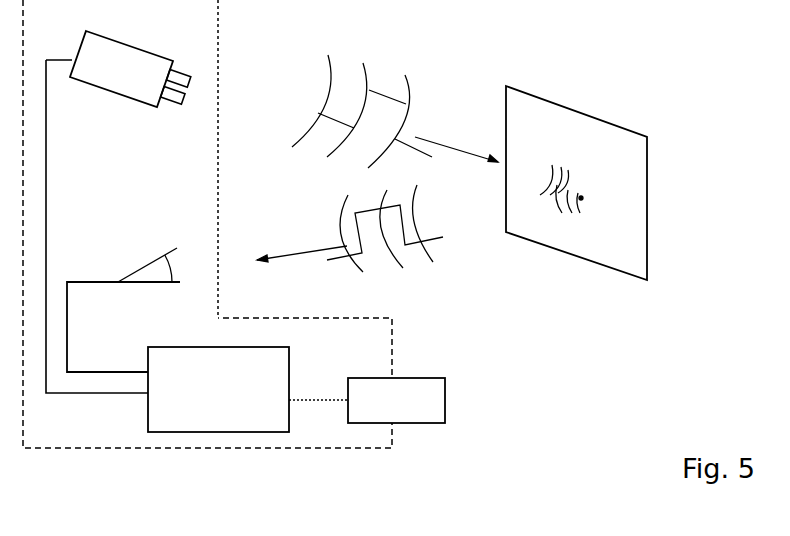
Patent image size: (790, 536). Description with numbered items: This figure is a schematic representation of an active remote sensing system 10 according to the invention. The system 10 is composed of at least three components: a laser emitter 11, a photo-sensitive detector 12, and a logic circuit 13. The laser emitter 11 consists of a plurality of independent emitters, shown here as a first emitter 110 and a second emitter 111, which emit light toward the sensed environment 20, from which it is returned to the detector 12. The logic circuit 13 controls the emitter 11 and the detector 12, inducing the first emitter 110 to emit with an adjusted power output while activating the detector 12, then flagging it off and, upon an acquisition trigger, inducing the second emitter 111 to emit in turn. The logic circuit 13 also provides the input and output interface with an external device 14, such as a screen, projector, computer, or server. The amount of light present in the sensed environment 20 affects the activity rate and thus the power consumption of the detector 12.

The active remote sensing system 10 is at (228, 28).
The laser emitter 11 is at (167, 53).
The first emitter 110 is at (191, 77).
The second emitter 111 is at (187, 97).
The photo-sensitive detector 12 is at (150, 290).
The logic circuit 13 is at (218, 389).
The external device 14 is at (396, 401).
The sensed environment 20 is at (574, 108).